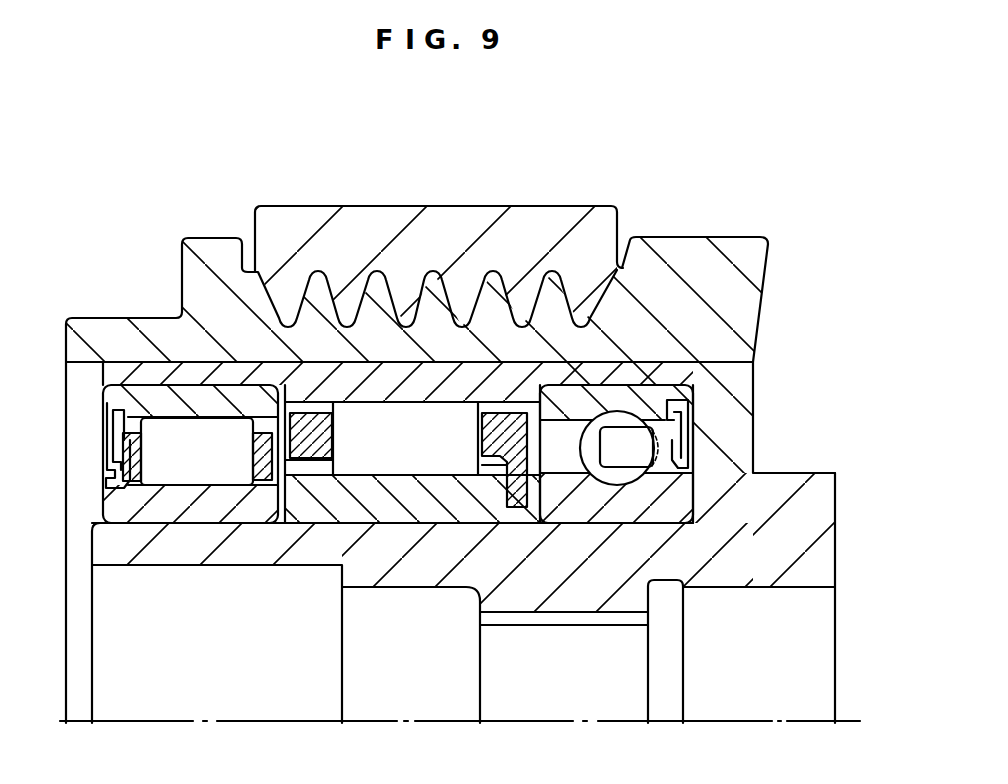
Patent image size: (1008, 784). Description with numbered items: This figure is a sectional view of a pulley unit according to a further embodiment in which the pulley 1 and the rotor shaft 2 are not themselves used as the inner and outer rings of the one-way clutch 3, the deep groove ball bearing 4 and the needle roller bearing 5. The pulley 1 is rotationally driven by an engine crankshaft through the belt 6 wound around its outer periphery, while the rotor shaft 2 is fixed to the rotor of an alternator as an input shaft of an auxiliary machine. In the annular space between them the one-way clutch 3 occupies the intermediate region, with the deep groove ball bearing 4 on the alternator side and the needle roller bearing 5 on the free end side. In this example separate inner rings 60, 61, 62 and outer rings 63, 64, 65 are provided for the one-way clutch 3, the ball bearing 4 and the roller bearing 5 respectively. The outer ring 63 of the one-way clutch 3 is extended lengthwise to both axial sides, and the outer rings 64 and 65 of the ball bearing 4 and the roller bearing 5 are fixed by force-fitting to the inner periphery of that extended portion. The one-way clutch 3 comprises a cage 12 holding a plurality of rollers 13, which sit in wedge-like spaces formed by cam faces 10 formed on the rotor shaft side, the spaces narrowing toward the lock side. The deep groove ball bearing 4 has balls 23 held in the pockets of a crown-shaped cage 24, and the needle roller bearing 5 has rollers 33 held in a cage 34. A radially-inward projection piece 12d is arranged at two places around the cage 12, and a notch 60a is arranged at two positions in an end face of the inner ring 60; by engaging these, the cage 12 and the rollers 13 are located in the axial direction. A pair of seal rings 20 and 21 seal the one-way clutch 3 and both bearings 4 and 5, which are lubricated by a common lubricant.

The pulley 1 is at (680, 245).
The rotor shaft 2 is at (828, 573).
The one-way clutch 3 is at (253, 352).
The deep groove ball bearing 4 is at (645, 383).
The needle roller bearing 5 is at (188, 382).
The belt 6 is at (281, 222).
The cam face 10 is at (416, 462).
The cage 12 is at (277, 512).
The radially-inward projection piece 12d is at (528, 487).
The rollers 13 is at (408, 418).
The seal ring 20 is at (683, 393).
The seal ring 21 is at (106, 436).
The balls 23 is at (637, 477).
The cage 24 is at (657, 447).
The rollers 33 is at (172, 438).
The cage 34 is at (112, 396).
The inner ring 60 is at (333, 516).
The notch 60a is at (507, 513).
The inner ring 61 is at (687, 512).
The inner ring 62 is at (183, 513).
The outer ring 63 is at (527, 362).
The outer ring 64 is at (755, 362).
The outer ring 65 is at (226, 397).